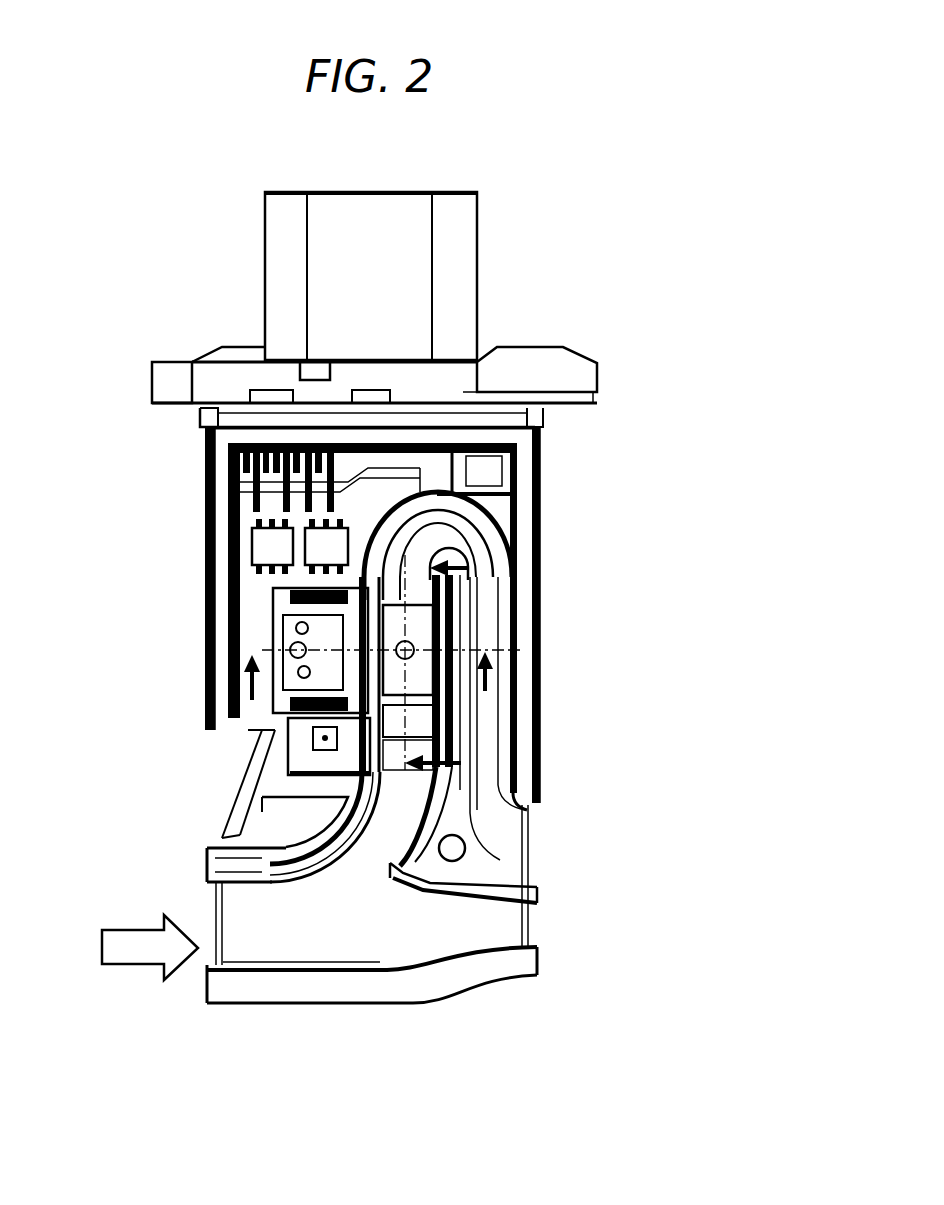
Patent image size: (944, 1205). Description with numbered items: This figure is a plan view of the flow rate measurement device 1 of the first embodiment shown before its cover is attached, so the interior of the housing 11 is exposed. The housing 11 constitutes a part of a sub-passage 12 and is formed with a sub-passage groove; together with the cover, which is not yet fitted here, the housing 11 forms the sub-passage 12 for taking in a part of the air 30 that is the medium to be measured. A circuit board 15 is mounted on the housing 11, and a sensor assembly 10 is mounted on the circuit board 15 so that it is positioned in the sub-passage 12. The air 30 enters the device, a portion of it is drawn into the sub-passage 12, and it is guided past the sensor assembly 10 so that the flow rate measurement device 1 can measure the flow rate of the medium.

The flow rate measurement device 1 is at (545, 260).
The sensor assembly 10 is at (418, 632).
The housing 11 is at (582, 378).
The sub-passage 12 is at (500, 925).
The circuit board 15 is at (241, 617).
The air 30 is at (133, 948).